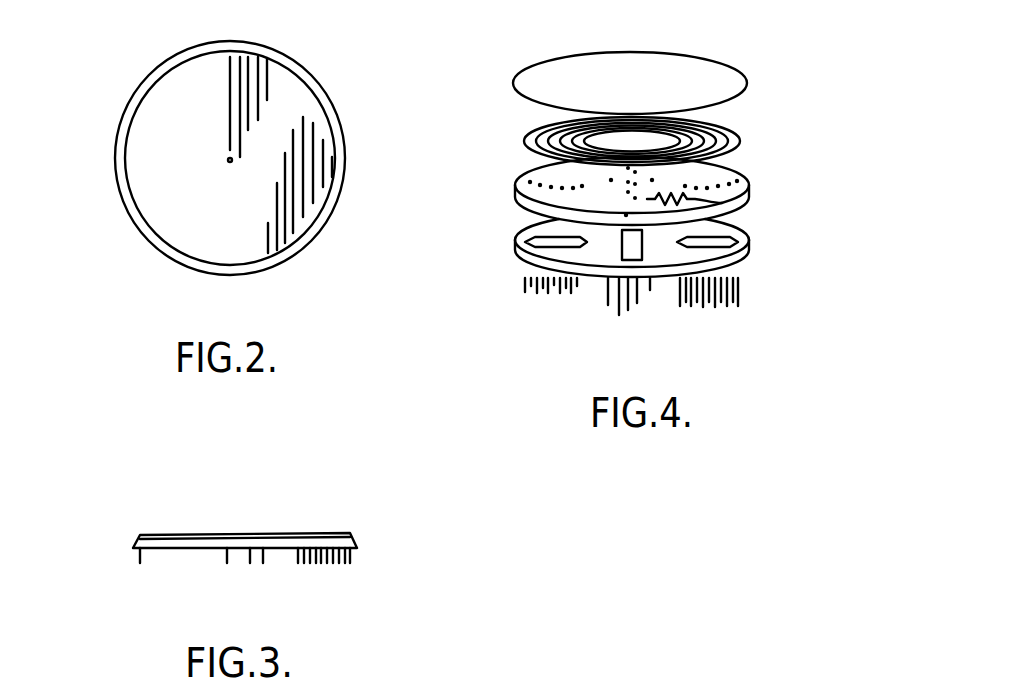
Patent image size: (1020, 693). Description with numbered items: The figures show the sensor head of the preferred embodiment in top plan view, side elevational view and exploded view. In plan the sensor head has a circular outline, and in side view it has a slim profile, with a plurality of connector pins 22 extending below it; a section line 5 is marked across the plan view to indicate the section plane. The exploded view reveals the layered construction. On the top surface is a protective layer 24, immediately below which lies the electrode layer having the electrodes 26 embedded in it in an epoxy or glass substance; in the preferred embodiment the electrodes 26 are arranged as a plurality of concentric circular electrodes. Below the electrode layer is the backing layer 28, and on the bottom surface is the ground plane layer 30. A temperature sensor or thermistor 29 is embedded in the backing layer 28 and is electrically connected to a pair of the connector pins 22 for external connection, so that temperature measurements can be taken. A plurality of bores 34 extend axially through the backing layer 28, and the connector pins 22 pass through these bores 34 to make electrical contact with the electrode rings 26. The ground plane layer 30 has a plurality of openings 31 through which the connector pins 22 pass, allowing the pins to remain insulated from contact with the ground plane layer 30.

In FIG. 2, the section line 5- 5 is at (183, 118).
In FIG. 3, the connector pins 22 is at (315, 563).
In FIG. 4, the connector pins 22 is at (740, 293).
In FIG. 4, the protective layer 24 is at (717, 62).
In FIG. 4, the electrodes 26 is at (755, 107).
In FIG. 4, the backing layer 28 is at (750, 175).
In FIG. 4, the thermistor 29 is at (722, 203).
In FIG. 4, the ground plane layer 30 is at (755, 227).
In FIG. 4, the openings 31 is at (527, 243).
In FIG. 4, the bores 34 is at (533, 180).